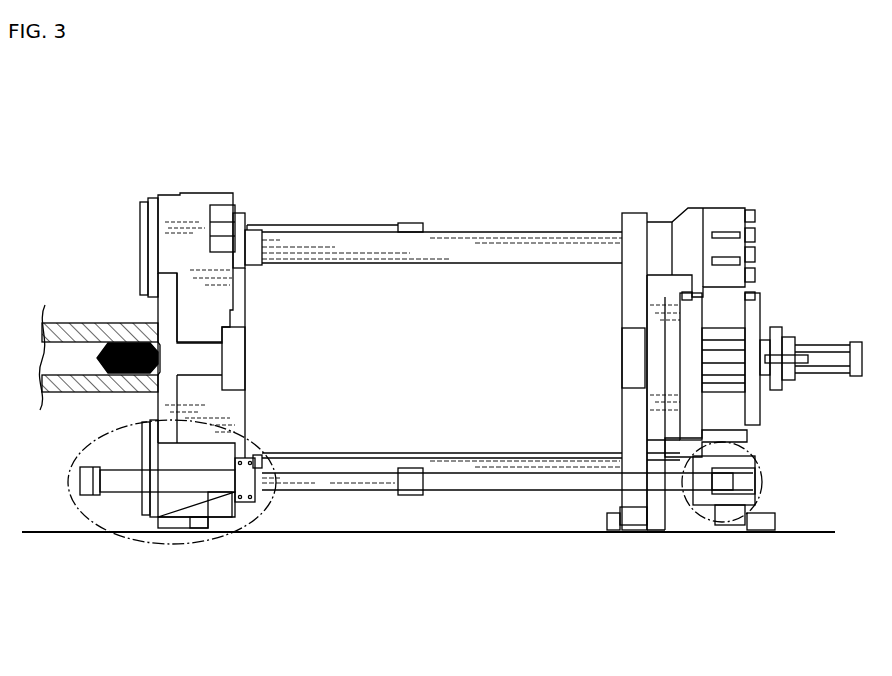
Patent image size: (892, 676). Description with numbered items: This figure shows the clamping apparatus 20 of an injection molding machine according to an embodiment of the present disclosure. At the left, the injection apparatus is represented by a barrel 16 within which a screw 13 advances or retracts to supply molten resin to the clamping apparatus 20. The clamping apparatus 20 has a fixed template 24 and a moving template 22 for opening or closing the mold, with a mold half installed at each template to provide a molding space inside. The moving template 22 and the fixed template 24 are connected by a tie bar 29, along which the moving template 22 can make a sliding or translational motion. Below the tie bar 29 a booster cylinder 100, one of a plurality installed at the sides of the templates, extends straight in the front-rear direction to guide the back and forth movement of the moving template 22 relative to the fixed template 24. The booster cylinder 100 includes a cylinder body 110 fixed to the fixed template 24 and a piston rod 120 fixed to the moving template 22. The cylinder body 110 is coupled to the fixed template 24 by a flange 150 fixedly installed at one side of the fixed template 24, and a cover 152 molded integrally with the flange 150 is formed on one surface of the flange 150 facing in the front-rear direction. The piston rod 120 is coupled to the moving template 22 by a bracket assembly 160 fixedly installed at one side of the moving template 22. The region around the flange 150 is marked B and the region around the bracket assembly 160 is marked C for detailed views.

The clamping apparatus 20 is at (742, 178).
The moving template 22 is at (661, 283).
The fixed template 24 is at (187, 235).
The tie bar 29 is at (320, 238).
The barrel 16 is at (83, 333).
The screw 13 is at (73, 367).
The booster cylinder 100 is at (320, 500).
The cylinder body 110 is at (124, 486).
The piston rod 120 is at (470, 483).
The flange 150 is at (243, 503).
The cover 152 is at (260, 498).
The bracket assembly 160 is at (737, 508).
The detail region B is at (185, 547).
The detail region C is at (700, 517).